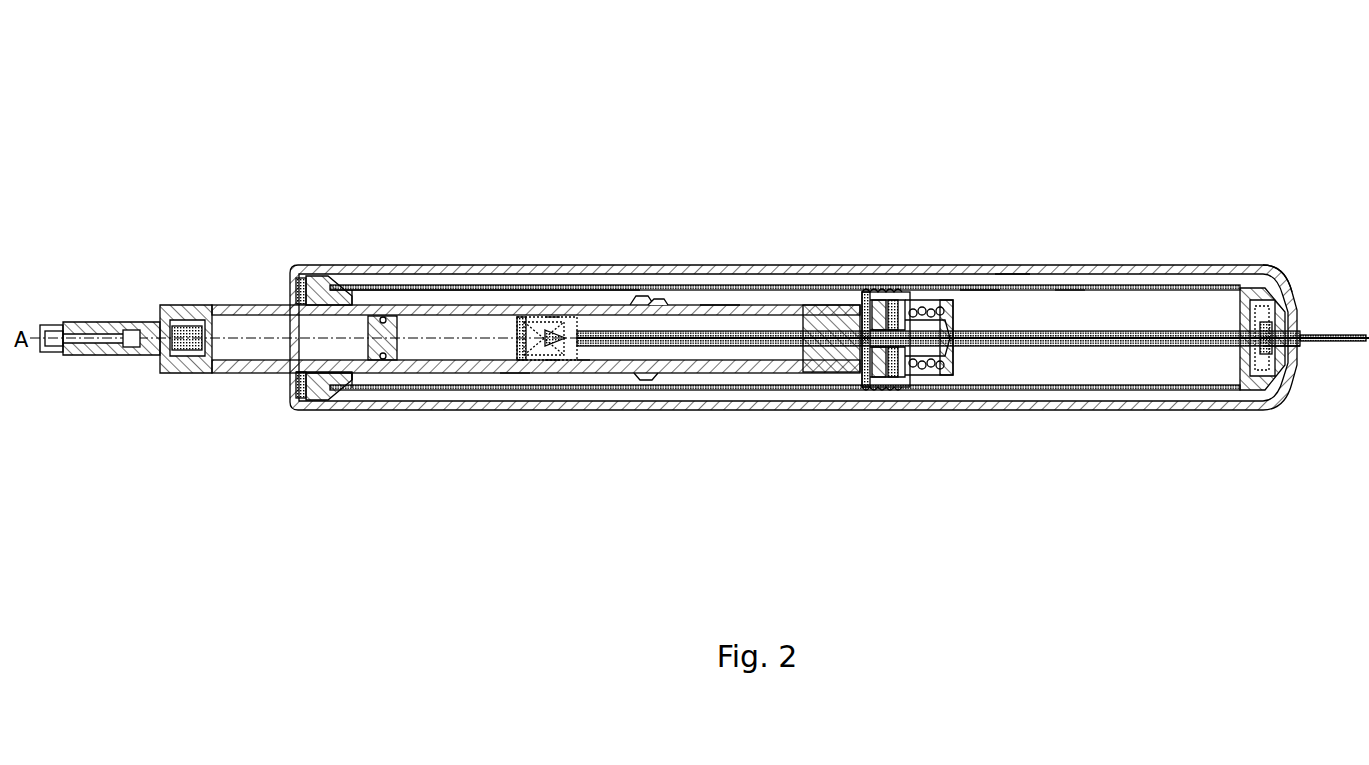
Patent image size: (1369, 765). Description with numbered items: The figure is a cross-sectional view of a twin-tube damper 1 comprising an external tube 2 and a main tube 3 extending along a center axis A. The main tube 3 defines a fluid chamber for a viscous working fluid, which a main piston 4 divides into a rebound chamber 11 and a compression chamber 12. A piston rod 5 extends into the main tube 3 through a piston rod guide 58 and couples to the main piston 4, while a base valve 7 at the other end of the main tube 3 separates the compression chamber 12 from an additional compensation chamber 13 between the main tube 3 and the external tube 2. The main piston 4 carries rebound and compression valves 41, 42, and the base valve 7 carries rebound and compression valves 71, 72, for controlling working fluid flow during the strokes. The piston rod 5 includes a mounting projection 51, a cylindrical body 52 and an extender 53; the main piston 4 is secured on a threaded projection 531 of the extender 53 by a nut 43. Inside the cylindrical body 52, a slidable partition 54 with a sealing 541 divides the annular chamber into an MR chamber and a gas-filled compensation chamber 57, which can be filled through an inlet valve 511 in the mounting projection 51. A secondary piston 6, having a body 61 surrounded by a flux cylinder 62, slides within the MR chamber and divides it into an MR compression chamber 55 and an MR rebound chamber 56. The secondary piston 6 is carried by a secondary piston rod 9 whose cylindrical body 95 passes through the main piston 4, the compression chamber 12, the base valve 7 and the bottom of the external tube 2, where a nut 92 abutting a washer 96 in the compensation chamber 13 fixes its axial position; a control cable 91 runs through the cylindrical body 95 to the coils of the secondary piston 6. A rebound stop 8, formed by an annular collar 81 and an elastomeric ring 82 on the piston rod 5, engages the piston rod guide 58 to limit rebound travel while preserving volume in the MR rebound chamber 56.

The twin-tube damper 1 is at (462, 440).
The external tube 2 is at (707, 403).
The main tube 3 is at (512, 410).
The main piston 4 is at (923, 290).
The piston rod 5 is at (250, 392).
The secondary piston 6 is at (522, 303).
The base valve 7 is at (1257, 404).
The rebound stop 8 is at (663, 284).
The secondary piston rod 9 is at (1008, 364).
The rebound chamber 11 is at (583, 374).
The compression chamber 12 is at (975, 300).
The additional compensation chamber 13 is at (1010, 290).
The rebound valve 41 is at (898, 300).
The compression valve 42 is at (855, 383).
The nut 43 is at (945, 378).
The mounting projection 51 is at (100, 357).
The cylindrical body 52 is at (405, 300).
The extender 53 is at (842, 302).
The slidable partition 54 is at (370, 300).
The MR compression chamber 55 is at (463, 300).
The MR rebound chamber 56 is at (722, 300).
The compensation chamber 57 is at (247, 305).
The piston rod guide 58 is at (320, 400).
The body 61 is at (548, 303).
The flux cylinder 62 is at (552, 374).
The rebound valve 71 is at (1232, 330).
The compression valve 72 is at (1270, 268).
The annular collar 81 is at (650, 298).
The elastomeric ring 82 is at (632, 296).
The control cable 91 is at (1330, 345).
The nut 92 is at (1275, 392).
The cylindrical body 95 is at (1070, 300).
The washer 96 is at (1292, 282).
The inlet valve 511 is at (185, 376).
The threaded projection 531 is at (920, 372).
The sealing 541 is at (383, 374).